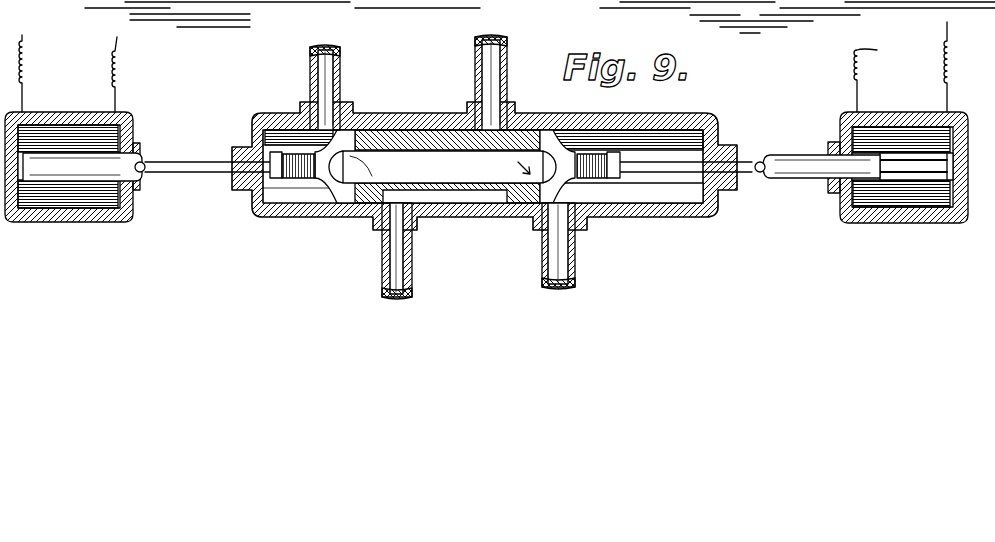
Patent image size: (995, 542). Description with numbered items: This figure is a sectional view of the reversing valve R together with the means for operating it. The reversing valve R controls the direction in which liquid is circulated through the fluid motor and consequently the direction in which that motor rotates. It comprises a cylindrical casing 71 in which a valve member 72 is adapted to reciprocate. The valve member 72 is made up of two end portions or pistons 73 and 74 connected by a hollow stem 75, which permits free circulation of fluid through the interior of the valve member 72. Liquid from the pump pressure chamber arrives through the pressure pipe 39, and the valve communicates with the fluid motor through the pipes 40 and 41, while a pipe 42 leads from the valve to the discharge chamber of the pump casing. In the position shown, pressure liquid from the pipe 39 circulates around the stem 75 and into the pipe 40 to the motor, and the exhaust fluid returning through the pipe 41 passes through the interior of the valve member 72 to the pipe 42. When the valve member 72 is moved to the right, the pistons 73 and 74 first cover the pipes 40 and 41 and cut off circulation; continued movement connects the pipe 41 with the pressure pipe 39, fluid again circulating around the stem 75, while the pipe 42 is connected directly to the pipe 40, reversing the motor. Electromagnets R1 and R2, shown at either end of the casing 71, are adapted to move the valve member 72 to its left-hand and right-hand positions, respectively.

The reversing valve R is at (448, 153).
The electromagnet R1 is at (62, 112).
The electromagnet R2 is at (903, 112).
The cylindrical casing 71 is at (560, 117).
The valve member 72 is at (420, 140).
The piston 73 is at (350, 203).
The piston 74 is at (520, 217).
The hollow stem 75 is at (468, 190).
The pressure pipe 39 is at (502, 40).
The pipe 40 is at (392, 270).
The pipe 41 is at (548, 267).
The pipe 42 is at (318, 62).